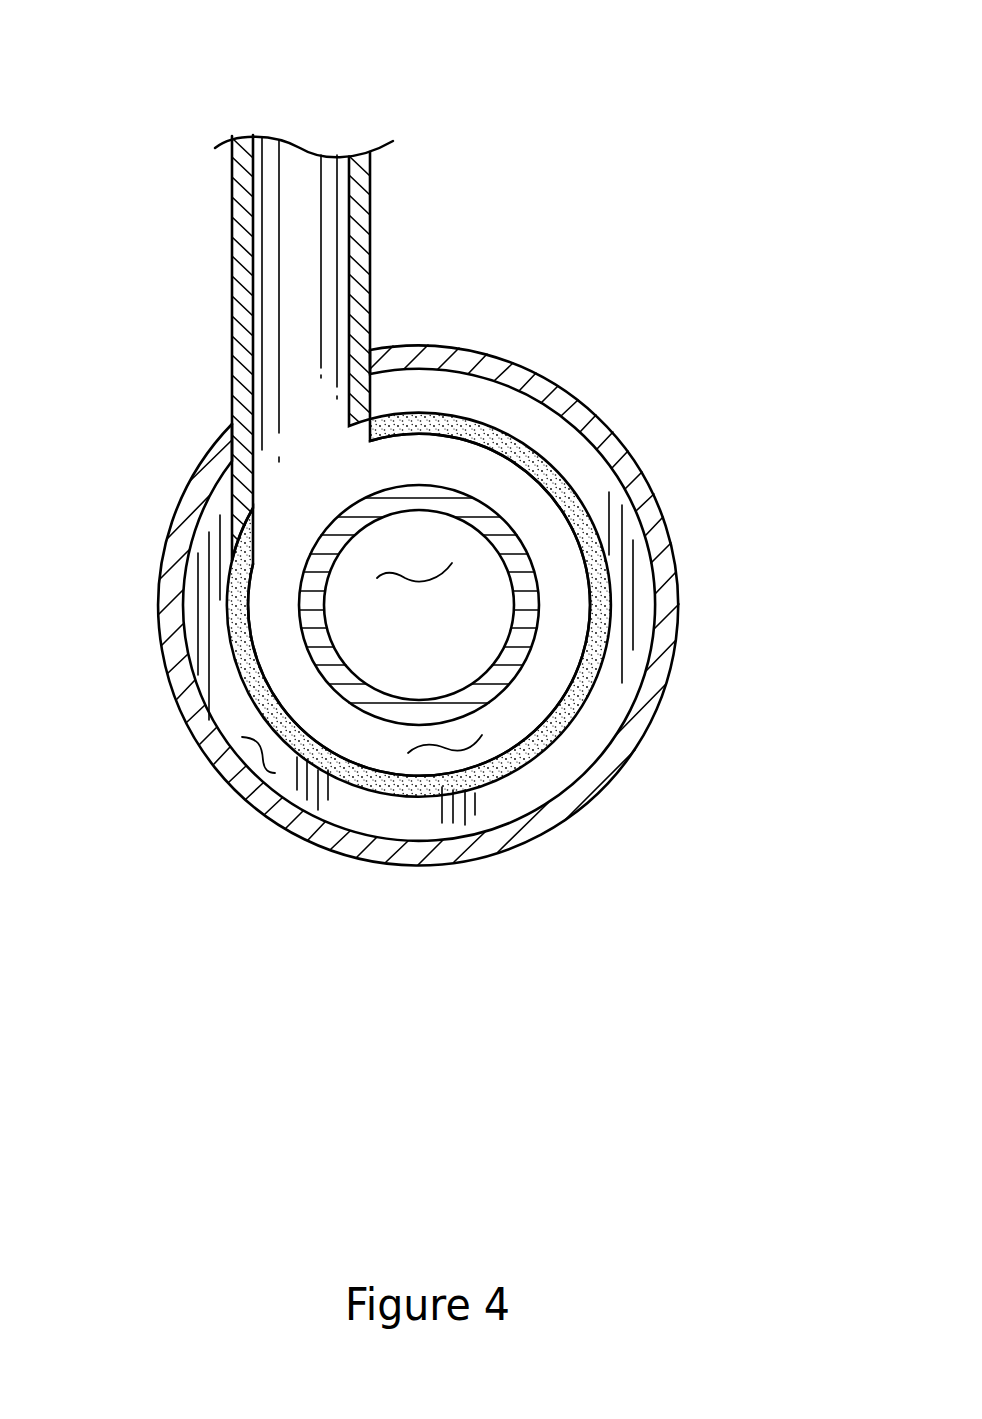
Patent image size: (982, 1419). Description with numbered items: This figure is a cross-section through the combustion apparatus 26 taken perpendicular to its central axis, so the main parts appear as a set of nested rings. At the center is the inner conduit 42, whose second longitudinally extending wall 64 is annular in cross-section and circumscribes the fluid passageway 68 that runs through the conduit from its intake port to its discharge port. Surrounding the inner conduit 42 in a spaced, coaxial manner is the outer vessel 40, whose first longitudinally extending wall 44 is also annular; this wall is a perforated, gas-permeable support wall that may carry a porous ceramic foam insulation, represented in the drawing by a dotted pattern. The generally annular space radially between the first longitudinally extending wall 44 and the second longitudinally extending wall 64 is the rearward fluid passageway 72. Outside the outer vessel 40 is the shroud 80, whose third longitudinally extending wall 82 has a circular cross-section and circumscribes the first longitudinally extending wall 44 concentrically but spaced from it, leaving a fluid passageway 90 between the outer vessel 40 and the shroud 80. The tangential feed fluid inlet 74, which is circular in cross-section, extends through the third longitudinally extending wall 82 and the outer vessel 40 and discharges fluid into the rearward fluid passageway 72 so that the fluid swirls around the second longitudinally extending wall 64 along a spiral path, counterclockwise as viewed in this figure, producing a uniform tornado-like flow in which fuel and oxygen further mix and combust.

The combustion apparatus 26 is at (602, 225).
The tangential feed fluid inlet 74 is at (298, 290).
The shroud 80 is at (176, 541).
The third longitudinally extending wall 82 is at (334, 833).
The fluid passageway 90 is at (245, 758).
The outer vessel 40 is at (528, 460).
The first longitudinally extending wall 44 is at (587, 557).
The rearward fluid passageway 72 is at (450, 752).
The inner conduit 42 is at (503, 664).
The second longitudinally extending wall 64 is at (312, 600).
The fluid passageway 68 is at (413, 575).